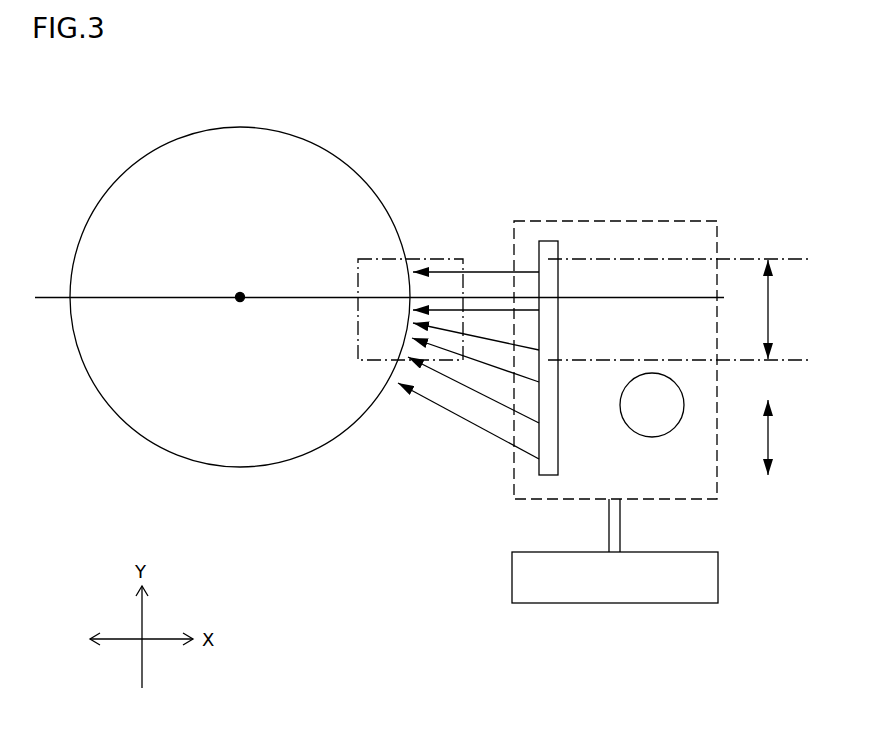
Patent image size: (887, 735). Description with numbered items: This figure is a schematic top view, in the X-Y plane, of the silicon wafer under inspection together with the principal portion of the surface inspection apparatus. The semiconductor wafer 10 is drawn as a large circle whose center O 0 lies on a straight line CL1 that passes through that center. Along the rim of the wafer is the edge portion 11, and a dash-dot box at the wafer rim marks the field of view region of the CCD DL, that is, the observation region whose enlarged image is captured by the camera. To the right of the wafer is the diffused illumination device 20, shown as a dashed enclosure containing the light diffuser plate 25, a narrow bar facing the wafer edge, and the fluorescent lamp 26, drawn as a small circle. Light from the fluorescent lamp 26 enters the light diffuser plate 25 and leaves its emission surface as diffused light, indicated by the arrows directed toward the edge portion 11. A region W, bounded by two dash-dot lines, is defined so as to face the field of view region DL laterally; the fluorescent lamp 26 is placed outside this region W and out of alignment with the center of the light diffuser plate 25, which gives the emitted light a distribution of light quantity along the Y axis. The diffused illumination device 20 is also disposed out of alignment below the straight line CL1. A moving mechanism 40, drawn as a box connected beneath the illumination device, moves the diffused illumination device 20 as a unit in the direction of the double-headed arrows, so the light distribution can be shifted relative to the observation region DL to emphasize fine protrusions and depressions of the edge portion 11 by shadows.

The semiconductor wafer 10 is at (114, 197).
The center of the semiconductor wafer 0 is at (240, 297).
The edge portion 11 is at (416, 258).
The diffused illumination device 20 is at (718, 221).
The light diffuser plate 25 is at (548, 241).
The fluorescent lamp 26 is at (653, 385).
The moving mechanism 40 is at (718, 575).
The field of view region of CCD DL is at (362, 360).
The straight line CL1 is at (746, 306).
The region W is at (684, 367).